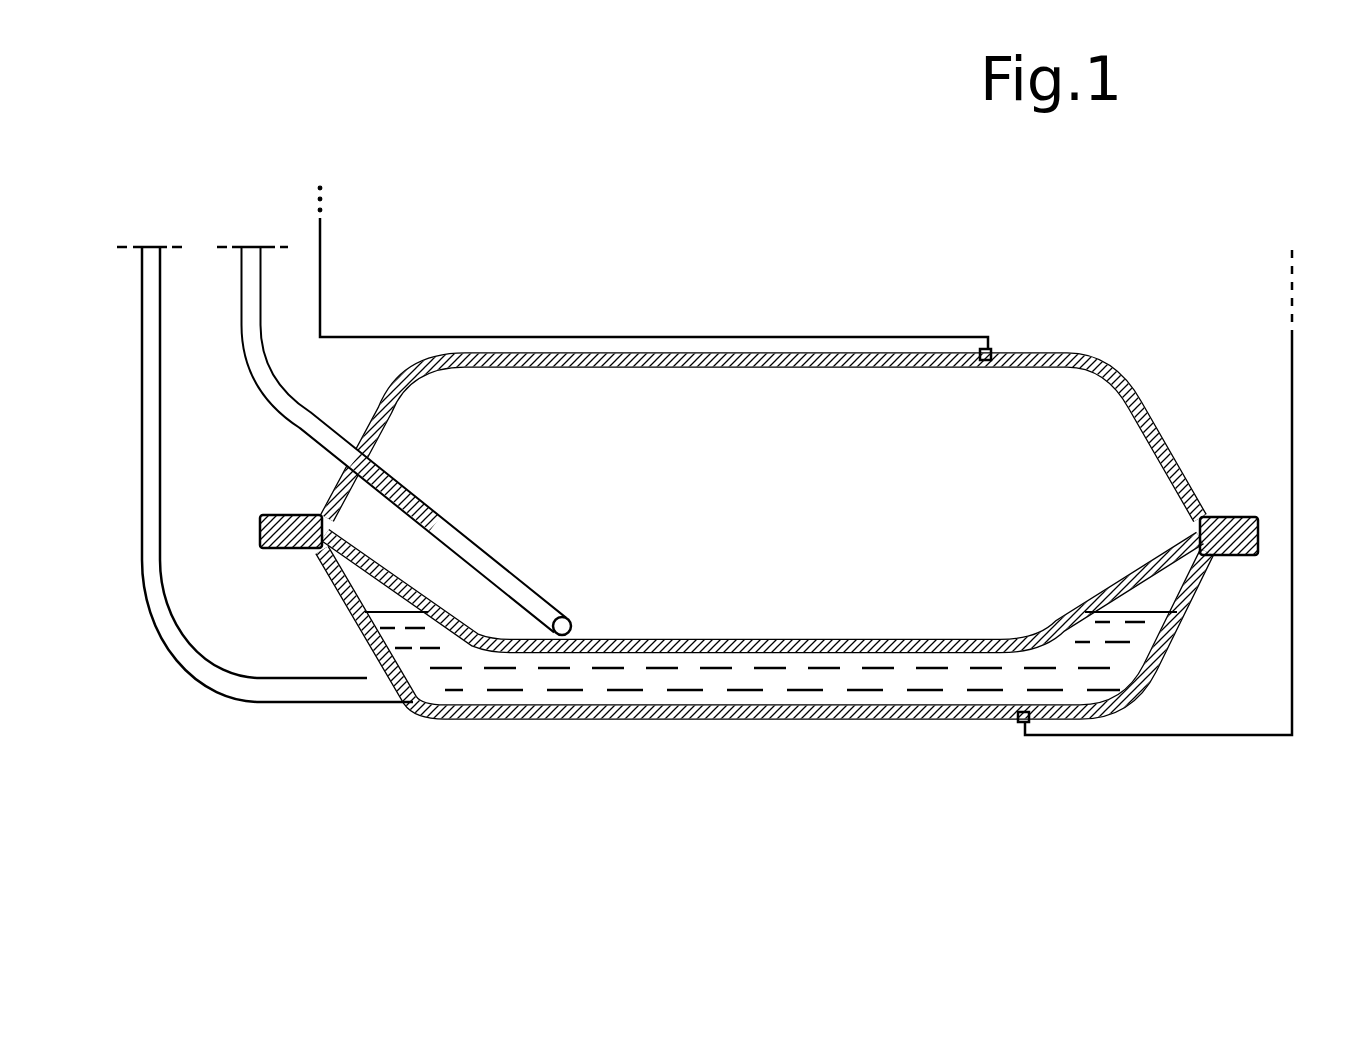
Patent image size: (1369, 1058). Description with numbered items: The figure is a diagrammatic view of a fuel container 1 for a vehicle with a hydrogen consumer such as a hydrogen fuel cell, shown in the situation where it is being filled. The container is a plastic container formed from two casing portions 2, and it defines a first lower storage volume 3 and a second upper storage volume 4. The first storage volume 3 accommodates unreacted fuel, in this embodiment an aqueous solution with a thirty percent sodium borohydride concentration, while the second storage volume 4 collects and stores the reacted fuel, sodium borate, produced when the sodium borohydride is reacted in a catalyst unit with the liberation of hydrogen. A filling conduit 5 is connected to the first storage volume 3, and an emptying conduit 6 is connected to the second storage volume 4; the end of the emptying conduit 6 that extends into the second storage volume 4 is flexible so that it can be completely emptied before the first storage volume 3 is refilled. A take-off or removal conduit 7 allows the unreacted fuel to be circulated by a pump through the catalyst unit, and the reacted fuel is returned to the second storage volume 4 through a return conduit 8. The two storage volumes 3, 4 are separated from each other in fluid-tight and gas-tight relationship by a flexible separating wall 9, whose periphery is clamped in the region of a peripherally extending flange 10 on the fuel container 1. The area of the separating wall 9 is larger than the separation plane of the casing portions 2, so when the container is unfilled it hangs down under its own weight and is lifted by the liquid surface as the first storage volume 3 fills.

The fuel container 1 is at (491, 732).
The casing portions 2 is at (1133, 402).
The first lower storage volume 3 is at (766, 683).
The second upper storage volume 4 is at (1017, 467).
The filling conduit 5 is at (180, 655).
The emptying conduit 6 is at (258, 365).
The take-off or removal conduit 7 is at (1295, 447).
The return conduit 8 is at (713, 337).
The flexible separating wall 9 is at (682, 648).
The peripherally extending flange 10 is at (1263, 560).